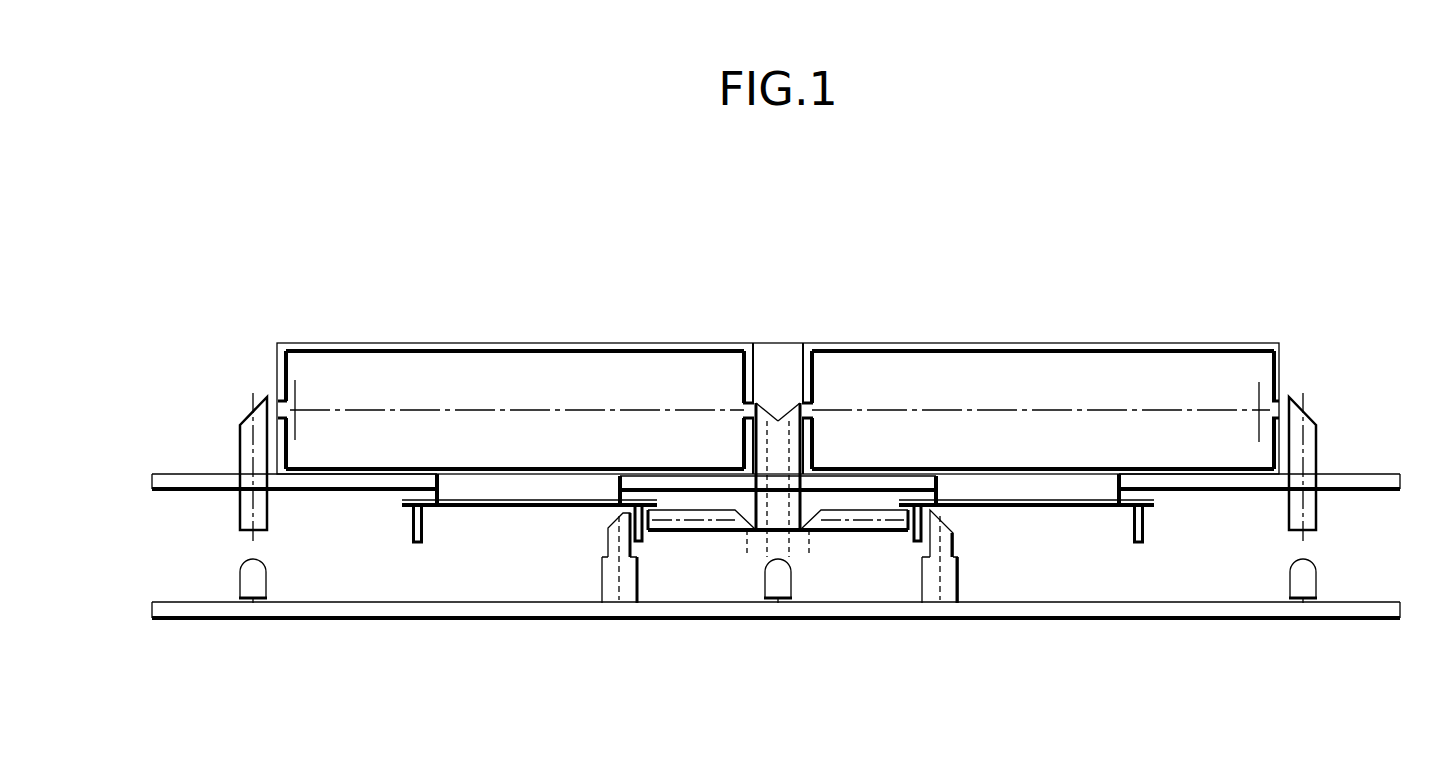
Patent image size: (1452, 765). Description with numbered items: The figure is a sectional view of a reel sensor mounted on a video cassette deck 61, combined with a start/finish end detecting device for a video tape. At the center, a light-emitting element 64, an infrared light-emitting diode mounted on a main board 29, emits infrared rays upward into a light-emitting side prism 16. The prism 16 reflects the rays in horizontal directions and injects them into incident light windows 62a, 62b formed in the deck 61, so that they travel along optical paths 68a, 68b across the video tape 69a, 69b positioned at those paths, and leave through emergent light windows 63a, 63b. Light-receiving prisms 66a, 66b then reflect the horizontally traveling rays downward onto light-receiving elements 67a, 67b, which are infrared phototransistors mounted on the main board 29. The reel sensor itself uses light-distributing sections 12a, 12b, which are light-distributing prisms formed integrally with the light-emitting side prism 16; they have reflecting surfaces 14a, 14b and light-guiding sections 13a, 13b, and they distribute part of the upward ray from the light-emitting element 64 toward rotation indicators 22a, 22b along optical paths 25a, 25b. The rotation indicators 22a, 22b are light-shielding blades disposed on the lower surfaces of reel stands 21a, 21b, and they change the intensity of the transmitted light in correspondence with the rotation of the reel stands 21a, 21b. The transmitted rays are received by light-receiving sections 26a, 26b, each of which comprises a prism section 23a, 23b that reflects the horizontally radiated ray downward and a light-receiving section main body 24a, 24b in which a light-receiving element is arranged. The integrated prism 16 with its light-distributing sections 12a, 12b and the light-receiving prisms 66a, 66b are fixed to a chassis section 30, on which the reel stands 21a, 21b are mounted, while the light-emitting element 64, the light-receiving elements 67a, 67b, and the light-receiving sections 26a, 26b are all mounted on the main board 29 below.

The video cassette deck 61 is at (524, 343).
The optical path 68a is at (463, 408).
The optical path 68b is at (1062, 408).
The emergent light window 63a is at (286, 408).
The emergent light window 63b is at (1273, 408).
The video tape 69a is at (275, 392).
The video tape 69b is at (1280, 395).
The incident light window 62a is at (748, 407).
The incident light window 62b is at (808, 407).
The light-emitting side prism 16 is at (779, 417).
The reflecting surface 14a is at (748, 493).
The reflecting surface 14b is at (808, 493).
The optical path 25a is at (678, 517).
The optical path 25b is at (878, 517).
The light-guiding section 13a is at (663, 530).
The light-guiding section 13b is at (872, 530).
The light-distributing section 12a is at (717, 530).
The light-distributing section 12b is at (840, 530).
The reel stand 21a is at (467, 507).
The reel stand 21b is at (1095, 507).
The rotation indicator 22a is at (645, 541).
The rotation indicator 22b is at (912, 541).
The prism section 23a is at (610, 537).
The prism section 23b is at (953, 533).
The light-receiving section 26a is at (603, 567).
The light-receiving section 26b is at (958, 567).
The light-receiving section main body 24a is at (602, 588).
The light-receiving section main body 24b is at (960, 588).
The light-emitting element 64 is at (765, 577).
The light-receiving element 67a is at (268, 583).
The light-receiving element 67b is at (1288, 583).
The light-receiving prism 66a is at (240, 443).
The light-receiving prism 66b is at (1317, 443).
The chassis section 30 is at (182, 490).
The main board 29 is at (181, 620).